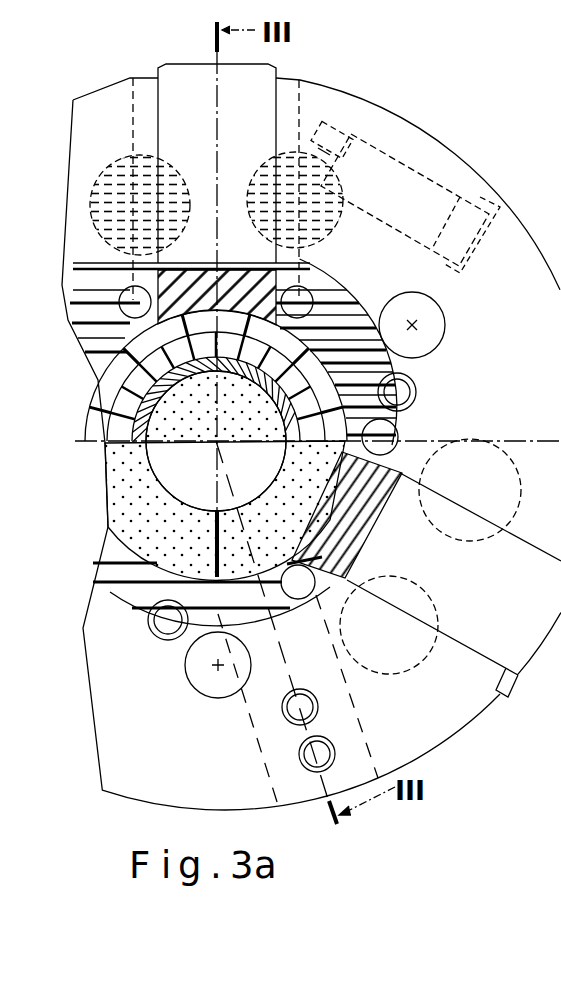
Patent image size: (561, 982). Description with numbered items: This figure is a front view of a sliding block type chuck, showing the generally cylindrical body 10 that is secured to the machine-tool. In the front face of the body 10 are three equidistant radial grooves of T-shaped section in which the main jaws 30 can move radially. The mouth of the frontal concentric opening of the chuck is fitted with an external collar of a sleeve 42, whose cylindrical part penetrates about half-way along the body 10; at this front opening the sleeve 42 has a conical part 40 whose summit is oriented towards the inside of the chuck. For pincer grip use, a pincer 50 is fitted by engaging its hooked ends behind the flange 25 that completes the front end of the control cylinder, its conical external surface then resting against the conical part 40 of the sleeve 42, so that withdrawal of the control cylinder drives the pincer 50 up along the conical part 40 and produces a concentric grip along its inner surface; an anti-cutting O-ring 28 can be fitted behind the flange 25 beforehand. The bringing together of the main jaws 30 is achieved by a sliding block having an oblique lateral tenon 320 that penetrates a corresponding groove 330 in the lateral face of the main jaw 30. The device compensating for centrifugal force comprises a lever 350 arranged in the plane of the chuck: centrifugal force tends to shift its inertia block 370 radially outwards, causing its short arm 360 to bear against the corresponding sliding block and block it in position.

The chuck body 10 is at (526, 320).
The flange 25 is at (435, 376).
The anti-cutting O-ring 28 is at (405, 420).
The main jaw 30 is at (198, 104).
The oblique lateral tenon 320 is at (272, 208).
The groove 330 is at (283, 183).
The lever 350 is at (358, 133).
The short arm 360 is at (330, 138).
The inertia block 370 is at (403, 182).
The conical part 40 is at (360, 328).
The sleeve 42 is at (310, 345).
The pincer 50 is at (147, 547).